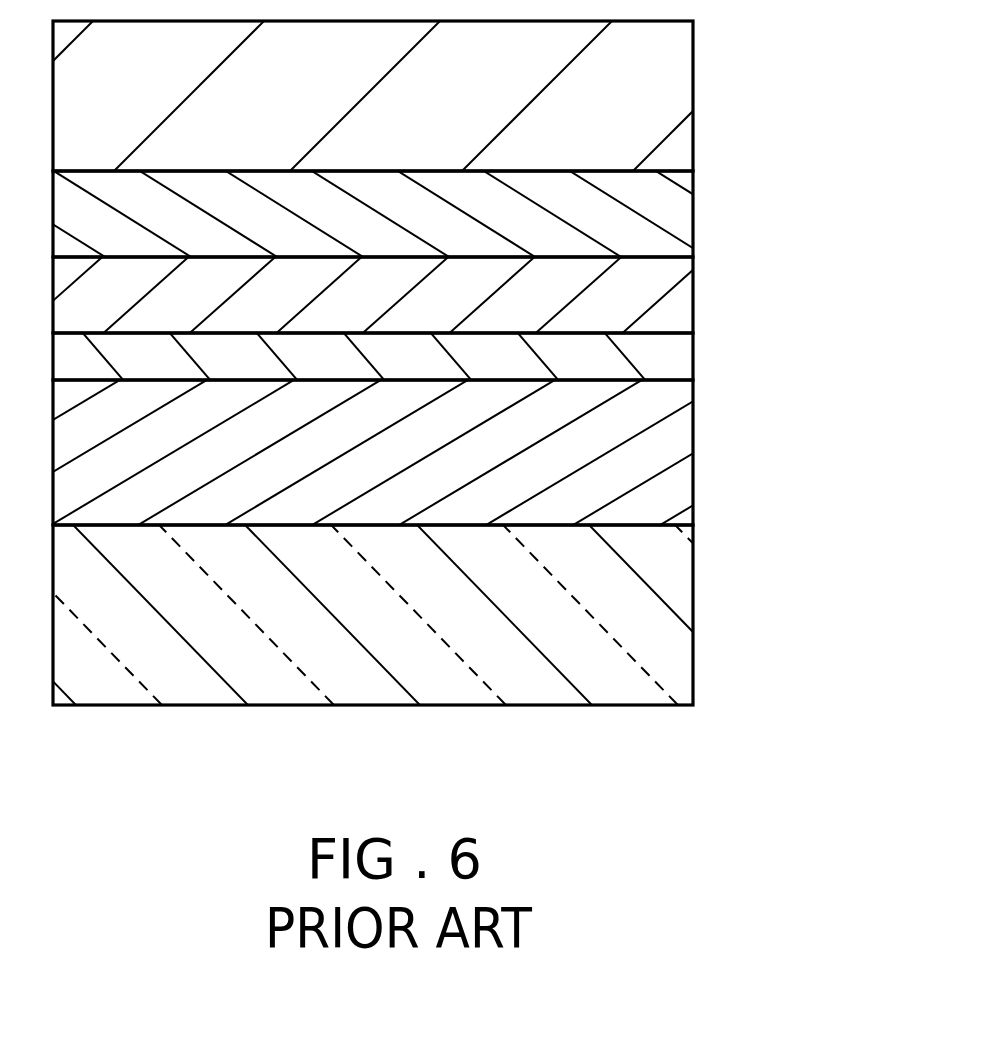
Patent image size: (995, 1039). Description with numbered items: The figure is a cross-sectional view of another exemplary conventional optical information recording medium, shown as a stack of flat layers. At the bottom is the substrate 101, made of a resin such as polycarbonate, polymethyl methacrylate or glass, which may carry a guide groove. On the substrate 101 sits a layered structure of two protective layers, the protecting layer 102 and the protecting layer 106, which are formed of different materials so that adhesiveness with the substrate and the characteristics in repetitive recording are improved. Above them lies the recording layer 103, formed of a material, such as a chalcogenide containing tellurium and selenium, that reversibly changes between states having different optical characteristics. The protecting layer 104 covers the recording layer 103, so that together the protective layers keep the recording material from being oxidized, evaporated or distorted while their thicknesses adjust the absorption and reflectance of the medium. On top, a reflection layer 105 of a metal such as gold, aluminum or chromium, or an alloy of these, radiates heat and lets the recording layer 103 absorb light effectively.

The substrate 101 is at (638, 608).
The protecting layer 102 is at (648, 453).
The protecting layer 106 is at (640, 362).
The recording layer 103 is at (632, 303).
The protecting layer 104 is at (647, 212).
The reflection layer 105 is at (650, 92).